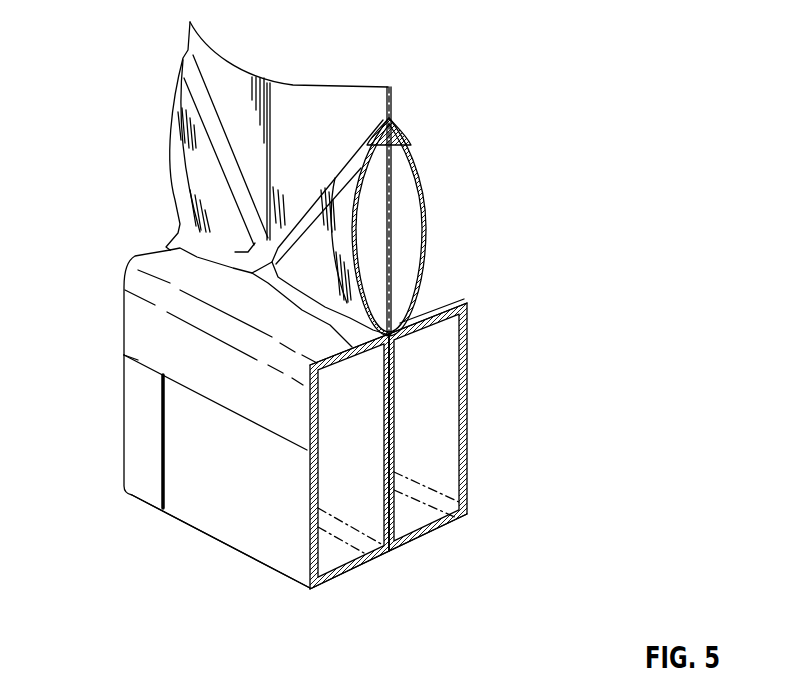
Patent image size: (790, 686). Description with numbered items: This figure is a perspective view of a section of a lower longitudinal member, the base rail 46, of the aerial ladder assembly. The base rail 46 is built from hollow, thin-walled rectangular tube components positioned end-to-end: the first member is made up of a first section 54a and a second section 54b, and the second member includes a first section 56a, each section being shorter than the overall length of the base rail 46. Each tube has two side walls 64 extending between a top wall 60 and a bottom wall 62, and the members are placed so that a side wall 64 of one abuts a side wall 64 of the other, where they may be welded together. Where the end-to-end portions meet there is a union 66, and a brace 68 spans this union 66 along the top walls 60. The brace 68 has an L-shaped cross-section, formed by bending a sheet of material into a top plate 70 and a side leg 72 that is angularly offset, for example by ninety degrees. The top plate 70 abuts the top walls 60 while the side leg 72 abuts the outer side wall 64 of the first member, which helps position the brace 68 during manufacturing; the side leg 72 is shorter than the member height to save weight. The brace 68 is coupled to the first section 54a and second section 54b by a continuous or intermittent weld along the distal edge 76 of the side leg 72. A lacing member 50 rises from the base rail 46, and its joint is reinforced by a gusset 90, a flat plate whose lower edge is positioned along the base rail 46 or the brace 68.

The base rail 46 is at (311, 426).
The lacing member 50 is at (181, 180).
The first section of first member 54a is at (178, 547).
The second section of first member 54b is at (166, 471).
The first section of second member 56a is at (382, 439).
The top wall 60 is at (322, 375).
The bottom wall 62 is at (349, 580).
The side wall 64 is at (264, 548).
The union 66 is at (163, 453).
The brace 68 is at (173, 344).
The top plate 70 is at (428, 296).
The side leg 72 is at (130, 323).
The distal edge of side leg 76 is at (138, 360).
The gusset 90 is at (292, 86).